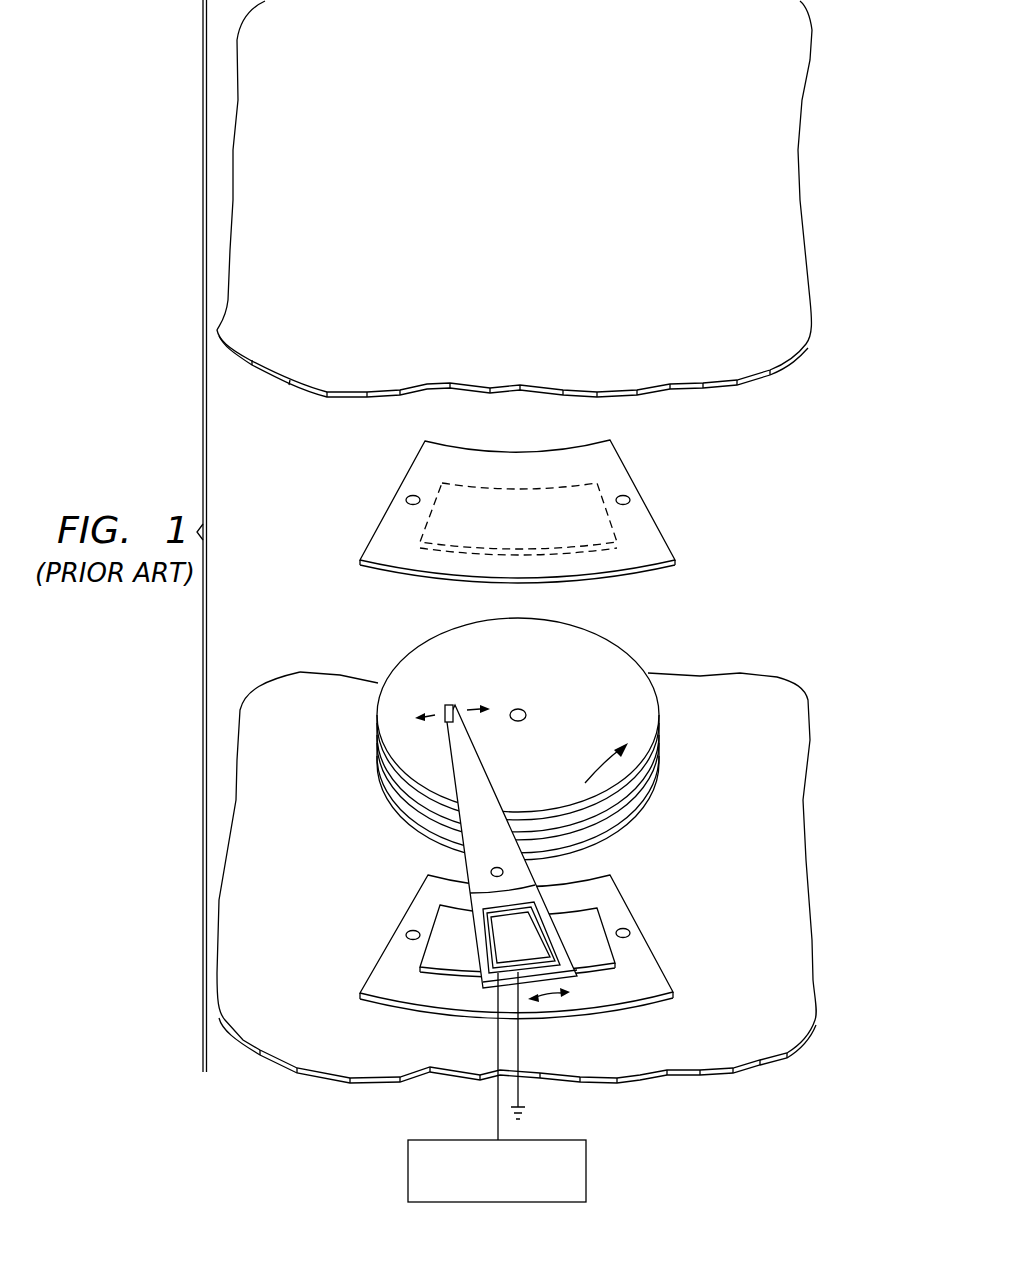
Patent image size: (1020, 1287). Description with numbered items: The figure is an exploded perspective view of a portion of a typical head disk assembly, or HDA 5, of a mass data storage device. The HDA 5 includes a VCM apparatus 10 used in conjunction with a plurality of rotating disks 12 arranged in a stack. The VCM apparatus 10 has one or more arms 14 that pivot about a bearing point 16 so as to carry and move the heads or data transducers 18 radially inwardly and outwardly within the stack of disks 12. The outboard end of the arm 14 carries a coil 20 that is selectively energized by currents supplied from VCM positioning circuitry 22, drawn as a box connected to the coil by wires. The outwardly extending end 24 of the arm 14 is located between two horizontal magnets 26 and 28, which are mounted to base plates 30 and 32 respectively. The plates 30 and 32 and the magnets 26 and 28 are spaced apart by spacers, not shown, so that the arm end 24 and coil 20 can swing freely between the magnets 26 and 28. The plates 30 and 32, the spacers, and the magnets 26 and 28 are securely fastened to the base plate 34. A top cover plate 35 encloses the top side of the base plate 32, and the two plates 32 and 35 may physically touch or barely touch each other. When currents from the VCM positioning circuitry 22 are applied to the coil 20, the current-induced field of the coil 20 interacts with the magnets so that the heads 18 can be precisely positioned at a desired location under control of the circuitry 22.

The HDA 5 is at (752, 643).
The VCM apparatus 10 is at (672, 890).
The rotating disks 12 is at (682, 738).
The arm 14 is at (467, 864).
The bearing point 16 is at (496, 866).
The heads 18 is at (447, 704).
The coil 20 is at (483, 955).
The VCM positioning circuitry 22 is at (587, 1171).
The outwardly extending end 24 is at (573, 976).
The horizontal magnet 26 is at (598, 908).
The horizontal magnet 28 is at (434, 548).
The base plate 30 is at (662, 978).
The base plate 32 is at (657, 528).
The base plate 34 is at (813, 985).
The top cover plate 35 is at (800, 213).